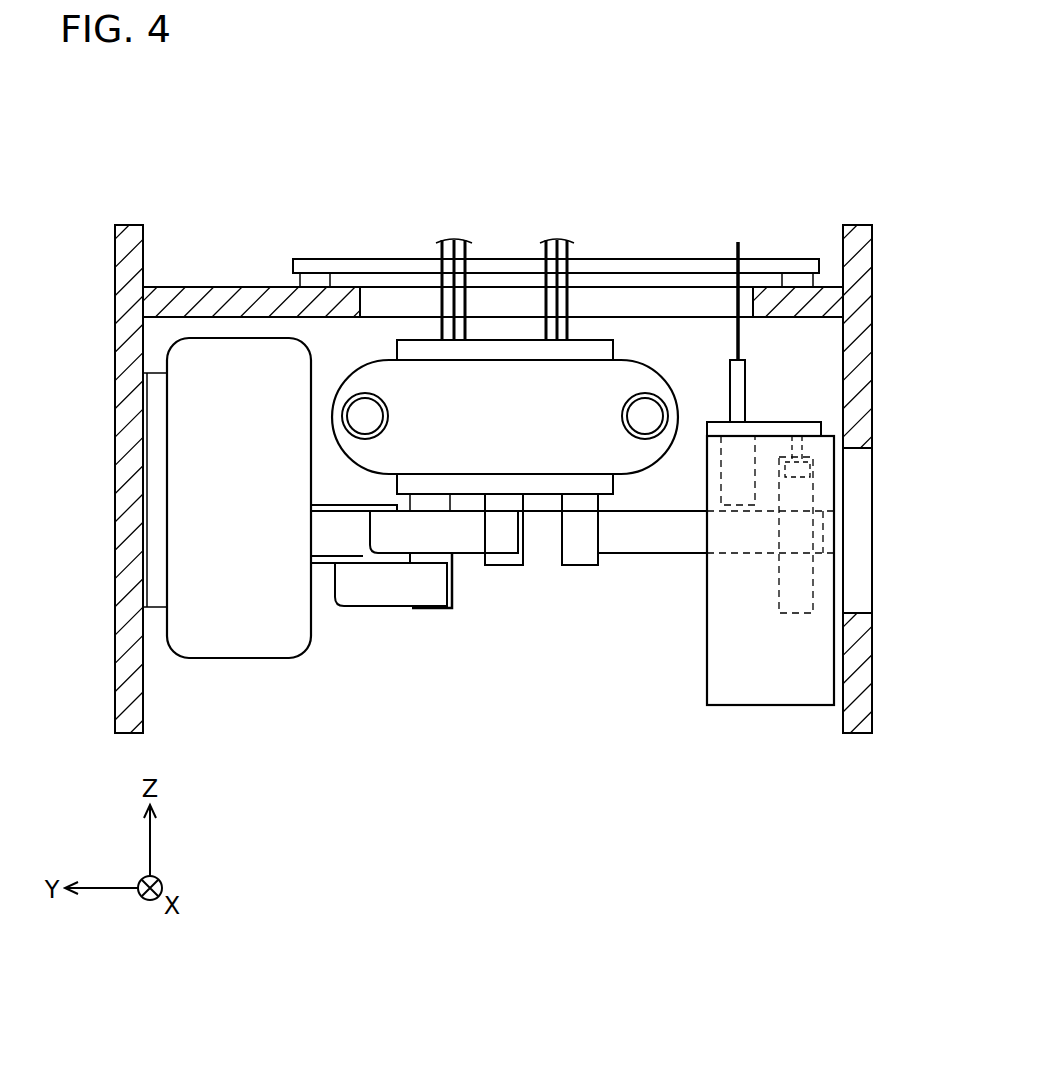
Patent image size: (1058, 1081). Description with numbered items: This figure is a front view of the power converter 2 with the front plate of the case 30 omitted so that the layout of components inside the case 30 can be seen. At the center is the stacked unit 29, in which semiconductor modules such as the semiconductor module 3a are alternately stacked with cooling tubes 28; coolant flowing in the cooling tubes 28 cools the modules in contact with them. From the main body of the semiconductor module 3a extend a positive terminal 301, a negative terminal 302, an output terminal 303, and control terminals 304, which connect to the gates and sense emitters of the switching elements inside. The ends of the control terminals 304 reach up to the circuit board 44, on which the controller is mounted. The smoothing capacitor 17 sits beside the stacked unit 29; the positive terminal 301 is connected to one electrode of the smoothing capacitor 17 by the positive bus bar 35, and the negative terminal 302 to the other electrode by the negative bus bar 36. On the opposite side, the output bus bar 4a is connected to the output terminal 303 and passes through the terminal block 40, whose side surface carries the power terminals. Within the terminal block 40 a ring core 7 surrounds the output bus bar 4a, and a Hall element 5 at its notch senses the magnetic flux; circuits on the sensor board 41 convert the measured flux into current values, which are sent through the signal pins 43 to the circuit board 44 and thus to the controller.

The power converter 2 is at (122, 162).
The case 30 is at (128, 227).
The circuit board 44 is at (297, 262).
The cooling tube 28 is at (380, 358).
The semiconductor module 3a is at (407, 338).
The control terminals 304 is at (550, 238).
The stacked unit 29 is at (641, 347).
The signal pins 43 is at (742, 343).
The sensor board 41 is at (805, 421).
The Hall element 5 is at (812, 470).
The ring core 7 is at (808, 590).
The terminal block 40 is at (726, 713).
The output bus bar 4a is at (623, 545).
The smoothing capacitor 17 is at (220, 649).
The positive bus bar 35 is at (358, 598).
The negative bus bar 36 is at (469, 555).
The positive terminal 301 is at (452, 612).
The negative terminal 302 is at (517, 567).
The output terminal 303 is at (563, 567).